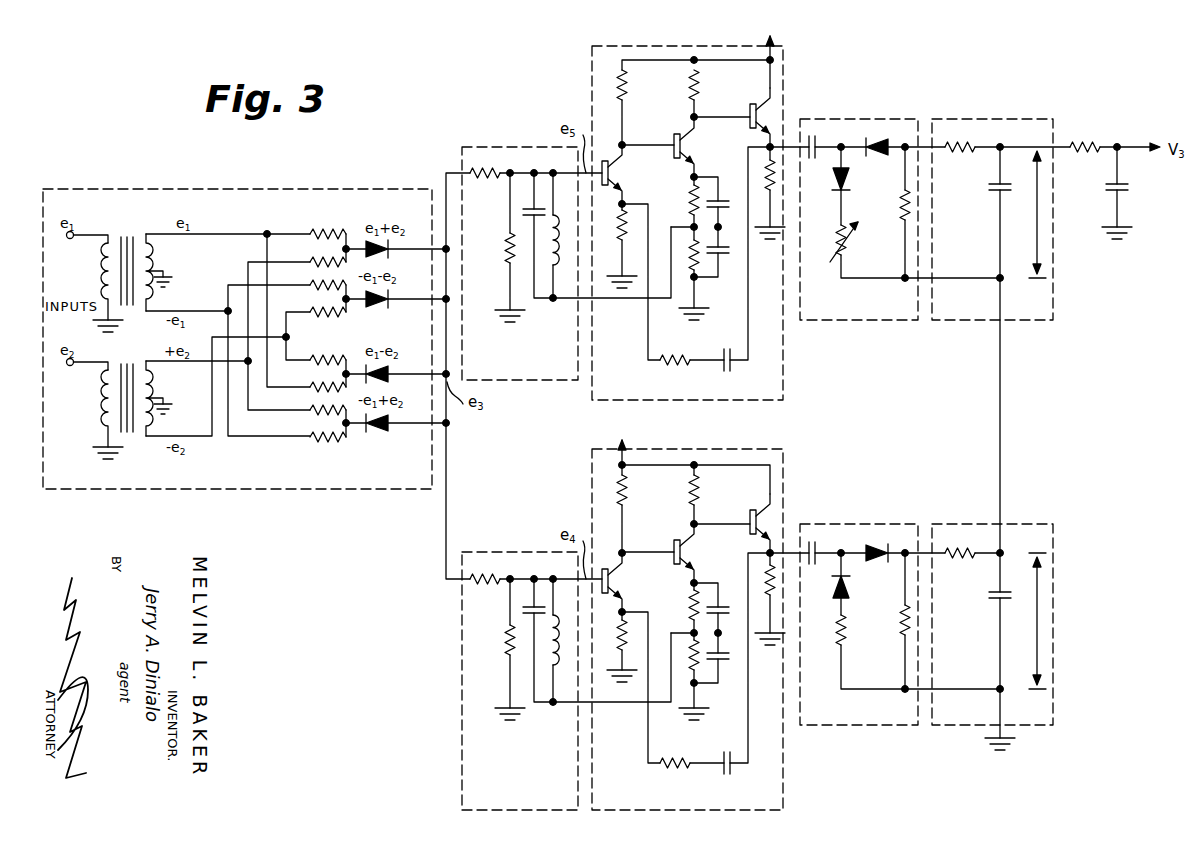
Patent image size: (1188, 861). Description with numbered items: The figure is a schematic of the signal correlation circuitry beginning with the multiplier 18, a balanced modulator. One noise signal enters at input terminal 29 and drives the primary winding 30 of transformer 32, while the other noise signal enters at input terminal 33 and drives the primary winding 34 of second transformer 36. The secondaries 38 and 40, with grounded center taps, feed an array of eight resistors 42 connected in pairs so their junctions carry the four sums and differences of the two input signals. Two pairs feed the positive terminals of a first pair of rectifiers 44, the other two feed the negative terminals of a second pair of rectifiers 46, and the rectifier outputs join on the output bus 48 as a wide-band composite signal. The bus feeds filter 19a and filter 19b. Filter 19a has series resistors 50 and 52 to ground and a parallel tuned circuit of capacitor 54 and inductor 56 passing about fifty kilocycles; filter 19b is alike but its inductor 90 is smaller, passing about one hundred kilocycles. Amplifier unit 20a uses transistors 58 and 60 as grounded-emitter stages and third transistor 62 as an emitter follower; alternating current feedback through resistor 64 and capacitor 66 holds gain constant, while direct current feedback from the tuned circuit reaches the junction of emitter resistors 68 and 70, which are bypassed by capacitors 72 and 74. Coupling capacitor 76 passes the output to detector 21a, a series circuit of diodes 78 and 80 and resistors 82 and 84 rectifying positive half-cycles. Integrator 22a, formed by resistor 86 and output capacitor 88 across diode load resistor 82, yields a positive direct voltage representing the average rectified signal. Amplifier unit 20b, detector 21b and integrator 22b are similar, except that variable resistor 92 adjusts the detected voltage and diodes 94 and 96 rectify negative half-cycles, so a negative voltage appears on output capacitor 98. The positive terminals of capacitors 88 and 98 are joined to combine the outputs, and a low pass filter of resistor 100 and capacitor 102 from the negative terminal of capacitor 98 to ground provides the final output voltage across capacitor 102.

The multiplier 18 is at (354, 189).
The input terminal 29 is at (68, 238).
The primary winding 30 is at (102, 285).
The transformer 32 is at (138, 229).
The input terminal 33 is at (68, 365).
The primary winding 34 is at (102, 412).
The second transformer 36 is at (138, 356).
The secondary winding 38 is at (153, 262).
The secondary winding 40 is at (153, 392).
The resistors 42 is at (306, 240).
The first pair of rectifiers 44 is at (394, 253).
The second pair of rectifiers 46 is at (394, 378).
The output bus 48 is at (442, 510).
The filter 19a is at (566, 670).
The filter 19b is at (566, 252).
The amplifier unit 20a is at (710, 614).
The amplifier unit 20b is at (787, 92).
The detector 21a is at (900, 612).
The detector 21b is at (900, 207).
The integrator 22a is at (992, 624).
The integrator 22b is at (1001, 323).
The resistor 50 is at (496, 584).
The resistor 52 is at (505, 644).
The capacitor 54 is at (534, 686).
The inductor 56 is at (557, 622).
The transistor 58 is at (619, 582).
The transistor 60 is at (692, 553).
The third transistor 62 is at (766, 523).
The resistor 64 is at (684, 758).
The capacitor 66 is at (734, 745).
The resistor 68 is at (688, 608).
The resistor 70 is at (689, 665).
The capacitor 72 is at (722, 614).
The capacitor 74 is at (728, 660).
The coupling capacitor 76 is at (814, 552).
The diode 78 is at (847, 585).
The diode 80 is at (871, 549).
The diode load resistor 82 is at (903, 636).
The resistor 84 is at (844, 646).
The resistor 86 is at (968, 553).
The output capacitor 88 is at (992, 595).
The inductor 90 is at (556, 220).
The variable resistor 92 is at (846, 245).
The diode 94 is at (847, 184).
The diode 96 is at (870, 155).
The output capacitor 98 is at (996, 185).
The resistor 100 is at (1090, 138).
The capacitor 102 is at (1111, 186).